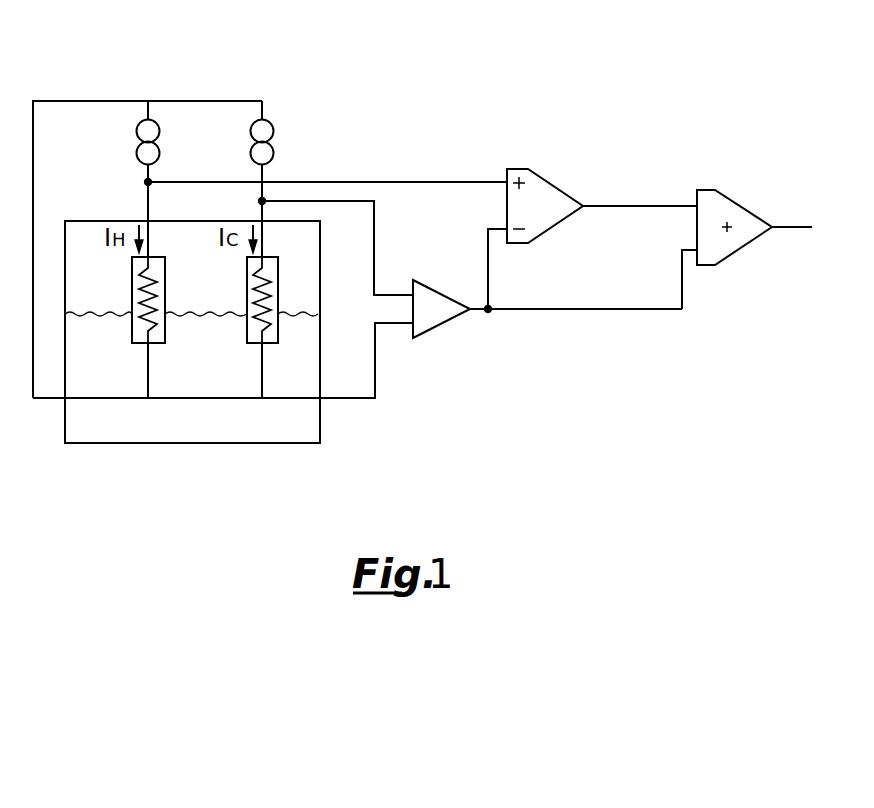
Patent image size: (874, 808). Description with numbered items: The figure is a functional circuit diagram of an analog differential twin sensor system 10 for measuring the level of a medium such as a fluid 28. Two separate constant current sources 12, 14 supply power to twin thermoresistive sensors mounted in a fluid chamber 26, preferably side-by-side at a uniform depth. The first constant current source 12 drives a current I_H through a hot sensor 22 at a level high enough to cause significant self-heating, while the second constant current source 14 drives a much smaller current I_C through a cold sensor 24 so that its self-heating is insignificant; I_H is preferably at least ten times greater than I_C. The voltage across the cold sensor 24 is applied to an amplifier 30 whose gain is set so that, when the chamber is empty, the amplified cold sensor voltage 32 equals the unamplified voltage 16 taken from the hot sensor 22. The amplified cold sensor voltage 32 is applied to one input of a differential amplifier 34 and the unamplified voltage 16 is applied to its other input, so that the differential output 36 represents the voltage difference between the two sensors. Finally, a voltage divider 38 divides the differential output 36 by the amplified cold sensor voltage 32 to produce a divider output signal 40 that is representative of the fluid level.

The differential twin sensor system 10 is at (322, 72).
The constant current source 12 is at (137, 142).
The constant current source 14 is at (274, 142).
The unamplified voltage 16 is at (333, 182).
The hot sensor 22 is at (165, 308).
The cold sensor 24 is at (278, 308).
The fluid chamber 26 is at (320, 326).
The fluid 28 is at (310, 389).
The amplifier 30 is at (437, 290).
The amplified cold sensor voltage 32 is at (477, 312).
The differential amplifier 34 is at (548, 184).
The differential output 36 is at (640, 206).
The voltage divider 38 is at (735, 202).
The divider output signal 40 is at (800, 227).